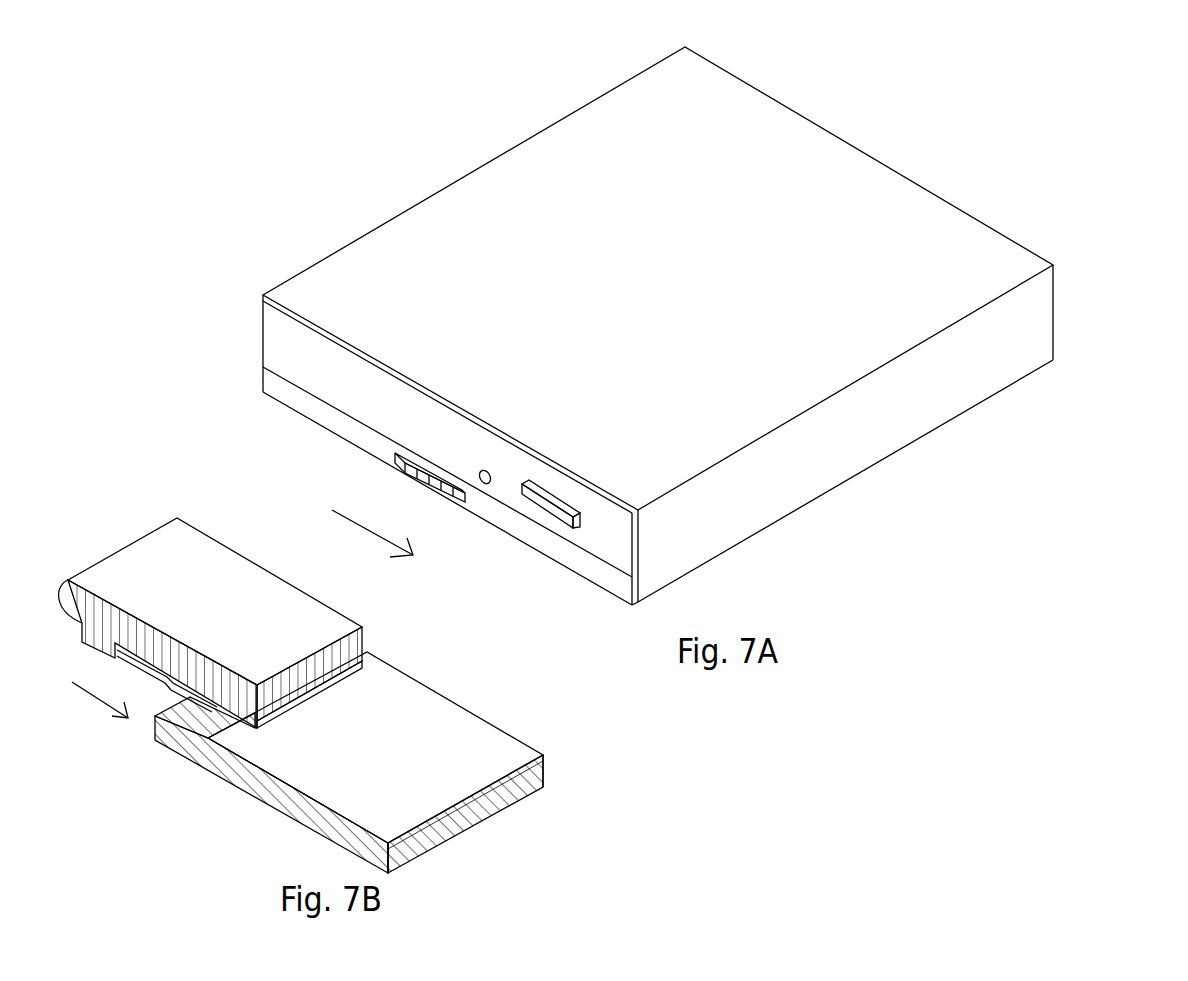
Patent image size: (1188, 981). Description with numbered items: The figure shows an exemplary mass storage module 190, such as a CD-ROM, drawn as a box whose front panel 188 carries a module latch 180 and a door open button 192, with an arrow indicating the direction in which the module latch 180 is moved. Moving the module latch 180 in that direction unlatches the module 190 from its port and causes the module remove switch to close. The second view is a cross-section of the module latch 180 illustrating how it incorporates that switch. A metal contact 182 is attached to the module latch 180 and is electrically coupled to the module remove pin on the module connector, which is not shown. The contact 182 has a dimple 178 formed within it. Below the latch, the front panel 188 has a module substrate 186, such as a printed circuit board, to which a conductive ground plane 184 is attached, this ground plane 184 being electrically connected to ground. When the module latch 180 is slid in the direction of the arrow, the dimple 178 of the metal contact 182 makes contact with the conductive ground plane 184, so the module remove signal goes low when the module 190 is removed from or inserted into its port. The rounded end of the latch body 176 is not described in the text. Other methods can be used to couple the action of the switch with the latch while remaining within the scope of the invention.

In FIG. 7B, the rounded end portion 176 is at (95, 652).
In FIG. 7B, the dimple 178 is at (156, 732).
In FIG. 7A, the module latch 180 is at (417, 472).
In FIG. 7B, the module latch 180 is at (196, 617).
In FIG. 7B, the metal contact 182 is at (180, 689).
In FIG. 7B, the conductive ground plane 184 is at (402, 710).
In FIG. 7B, the module substrate 186 is at (282, 812).
In FIG. 7A, the front panel 188 is at (285, 340).
In FIG. 7A, the module 190 is at (835, 348).
In FIG. 7A, the door open button 192 is at (550, 510).